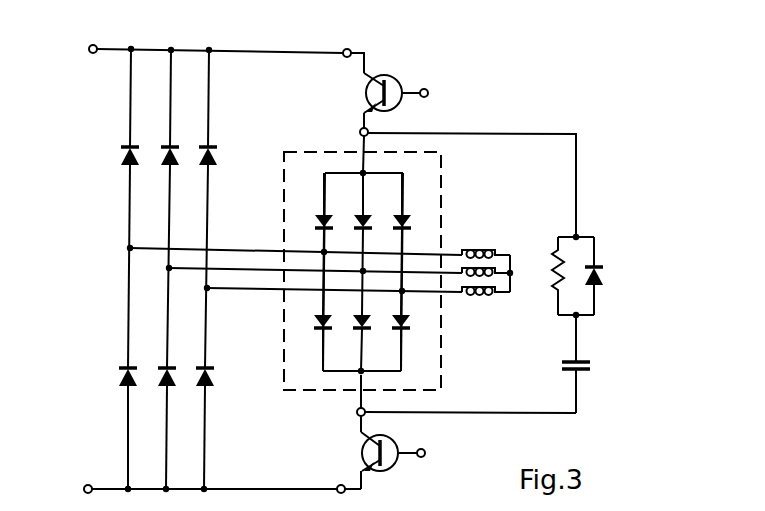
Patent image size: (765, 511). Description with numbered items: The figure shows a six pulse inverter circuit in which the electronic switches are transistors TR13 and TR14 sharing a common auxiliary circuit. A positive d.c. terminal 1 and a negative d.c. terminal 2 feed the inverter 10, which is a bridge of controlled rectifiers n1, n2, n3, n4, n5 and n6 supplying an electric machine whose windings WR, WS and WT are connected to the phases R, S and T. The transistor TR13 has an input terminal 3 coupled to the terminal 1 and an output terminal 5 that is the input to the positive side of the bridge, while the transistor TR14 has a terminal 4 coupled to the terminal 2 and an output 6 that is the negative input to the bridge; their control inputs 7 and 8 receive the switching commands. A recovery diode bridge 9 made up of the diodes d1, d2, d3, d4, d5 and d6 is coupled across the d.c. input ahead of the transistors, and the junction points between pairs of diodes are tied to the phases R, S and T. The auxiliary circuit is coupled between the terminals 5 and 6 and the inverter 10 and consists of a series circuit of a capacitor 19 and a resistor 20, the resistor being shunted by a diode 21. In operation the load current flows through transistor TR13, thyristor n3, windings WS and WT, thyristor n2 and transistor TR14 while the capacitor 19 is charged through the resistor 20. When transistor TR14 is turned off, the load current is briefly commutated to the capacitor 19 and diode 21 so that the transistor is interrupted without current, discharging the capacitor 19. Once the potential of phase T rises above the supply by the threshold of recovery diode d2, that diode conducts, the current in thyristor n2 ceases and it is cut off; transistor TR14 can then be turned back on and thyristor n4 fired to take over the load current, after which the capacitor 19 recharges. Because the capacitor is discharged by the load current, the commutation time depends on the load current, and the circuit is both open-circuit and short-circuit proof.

The positive d.c. terminal 1 is at (89, 49).
The negative d.c. terminal 2 is at (84, 489).
The input terminal of switch 3 is at (344, 56).
The terminal of switch 4 is at (343, 485).
The output terminal of switch 5 is at (360, 132).
The output of switch 6 is at (357, 412).
The control input of switch 7 is at (428, 93).
The control input of switch 8 is at (425, 453).
The recovery diode bridge 9 is at (111, 336).
The inverter 10 is at (343, 263).
The capacitor 19 is at (581, 361).
The resistor 20 is at (554, 264).
The diode 21 is at (597, 288).
The transistor TR13 is at (389, 76).
The transistor TR14 is at (394, 468).
The recovery diode d1 is at (127, 388).
The recovery diode d2 is at (207, 168).
The recovery diode d3 is at (167, 388).
The recovery diode d4 is at (128, 168).
The recovery diode d5 is at (206, 388).
The recovery diode d6 is at (168, 168).
The controlled rectifier n1 is at (321, 213).
The controlled rectifier n2 is at (400, 334).
The controlled rectifier n3 is at (360, 213).
The controlled rectifier n4 is at (320, 334).
The controlled rectifier n5 is at (399, 213).
The controlled rectifier n6 is at (360, 334).
The phase R is at (247, 250).
The phase S is at (264, 270).
The phase T is at (253, 290).
The winding WR is at (478, 249).
The winding WS is at (490, 276).
The winding WT is at (476, 296).